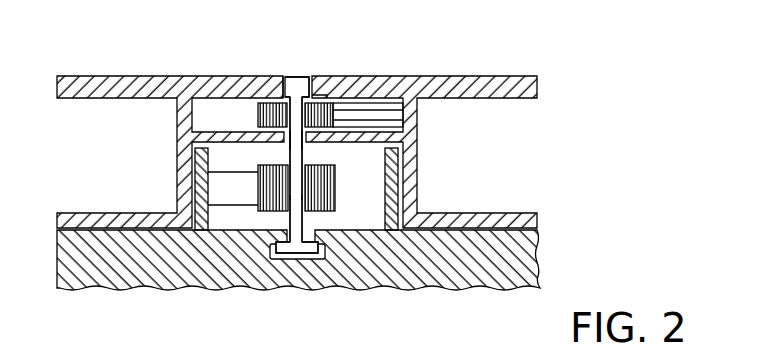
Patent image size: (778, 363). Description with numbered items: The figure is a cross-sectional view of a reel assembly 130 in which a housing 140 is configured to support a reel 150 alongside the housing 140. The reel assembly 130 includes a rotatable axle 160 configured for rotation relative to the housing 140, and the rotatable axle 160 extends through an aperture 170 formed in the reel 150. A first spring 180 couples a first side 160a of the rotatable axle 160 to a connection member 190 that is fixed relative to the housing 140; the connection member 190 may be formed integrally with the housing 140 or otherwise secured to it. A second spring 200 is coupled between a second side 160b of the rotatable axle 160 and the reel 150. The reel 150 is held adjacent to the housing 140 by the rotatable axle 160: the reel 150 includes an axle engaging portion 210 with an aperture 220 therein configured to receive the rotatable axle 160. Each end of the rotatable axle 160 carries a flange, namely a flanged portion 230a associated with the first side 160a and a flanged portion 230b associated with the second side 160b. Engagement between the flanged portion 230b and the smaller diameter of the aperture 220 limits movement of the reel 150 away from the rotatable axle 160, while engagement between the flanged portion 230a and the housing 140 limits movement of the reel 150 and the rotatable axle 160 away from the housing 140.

The reel assembly 130 is at (328, 119).
The housing 140 is at (210, 272).
The reel 150 is at (413, 110).
The rotatable axle 160 is at (317, 179).
The first side of the rotatable axle 160a is at (313, 235).
The second side of the rotatable axle 160b is at (300, 107).
The aperture 170 is at (311, 148).
The first spring 180 is at (338, 212).
The connection member 190 is at (290, 235).
The second spring 200 is at (325, 95).
The axle engaging portion 210 is at (158, 75).
The aperture 220 is at (281, 92).
The flanged portion 230a is at (297, 203).
The flanged portion 230b is at (298, 78).